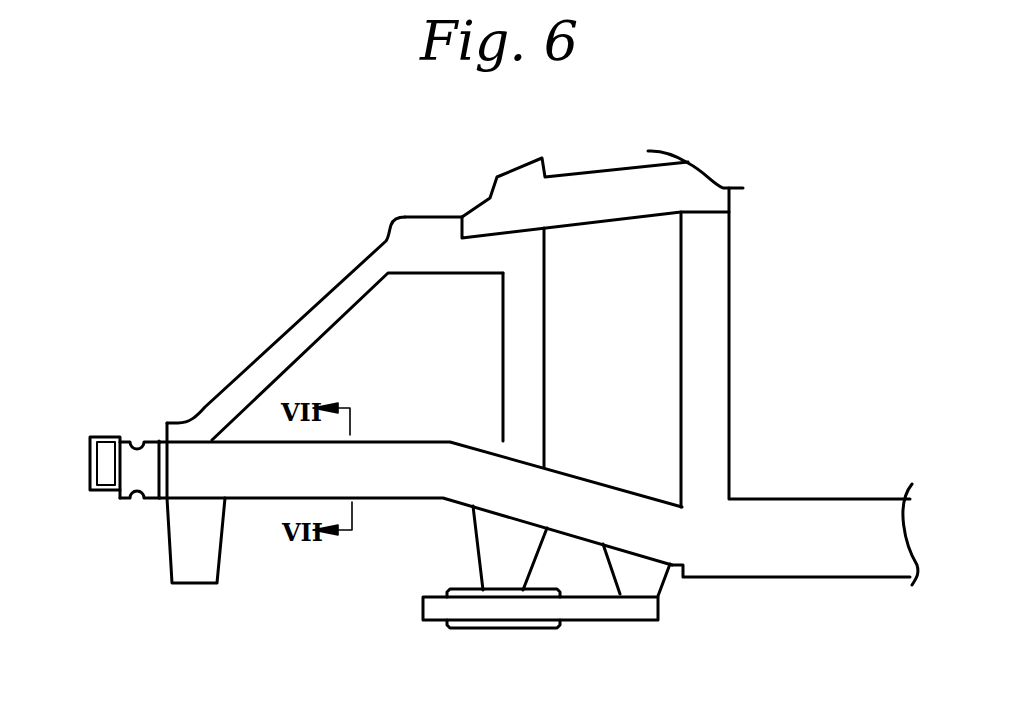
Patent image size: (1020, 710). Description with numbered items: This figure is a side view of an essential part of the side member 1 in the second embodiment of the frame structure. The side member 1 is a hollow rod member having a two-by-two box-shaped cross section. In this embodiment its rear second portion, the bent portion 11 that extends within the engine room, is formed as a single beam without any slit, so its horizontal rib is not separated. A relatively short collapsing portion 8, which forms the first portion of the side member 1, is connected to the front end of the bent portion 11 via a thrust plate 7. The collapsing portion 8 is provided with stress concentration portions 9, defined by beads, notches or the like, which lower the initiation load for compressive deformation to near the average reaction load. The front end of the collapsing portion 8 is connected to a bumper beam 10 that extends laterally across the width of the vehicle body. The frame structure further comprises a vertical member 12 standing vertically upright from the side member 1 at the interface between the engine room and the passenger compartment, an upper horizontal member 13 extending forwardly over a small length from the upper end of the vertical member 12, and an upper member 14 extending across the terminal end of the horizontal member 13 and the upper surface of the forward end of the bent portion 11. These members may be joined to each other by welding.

The side member 1 is at (429, 431).
The thrust plate 7 is at (160, 503).
The collapsing portion 8 is at (130, 498).
The stress concentration portions 9 is at (128, 438).
The bumper beam 10 is at (103, 437).
The bent portion 11 is at (391, 493).
The vertical member 12 is at (540, 412).
The upper horizontal member 13 is at (415, 220).
The upper member 14 is at (317, 313).